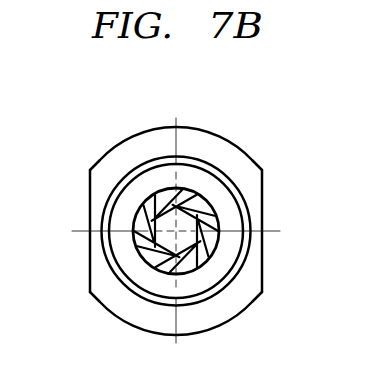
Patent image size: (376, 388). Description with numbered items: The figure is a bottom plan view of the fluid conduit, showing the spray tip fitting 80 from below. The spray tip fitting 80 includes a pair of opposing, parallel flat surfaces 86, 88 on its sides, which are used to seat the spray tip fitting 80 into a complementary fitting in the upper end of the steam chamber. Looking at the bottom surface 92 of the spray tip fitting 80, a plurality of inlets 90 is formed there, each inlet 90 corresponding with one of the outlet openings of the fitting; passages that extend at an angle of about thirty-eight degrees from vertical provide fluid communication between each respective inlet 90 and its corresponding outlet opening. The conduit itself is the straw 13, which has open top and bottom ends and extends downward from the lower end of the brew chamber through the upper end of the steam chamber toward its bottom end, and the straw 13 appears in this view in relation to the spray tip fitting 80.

The spray tip fitting 80 is at (189, 127).
The bottom surface 92 is at (228, 143).
The flat surface 86 is at (90, 200).
The flat surface 88 is at (263, 212).
The straw 13 is at (99, 248).
The inlets 90 is at (149, 203).